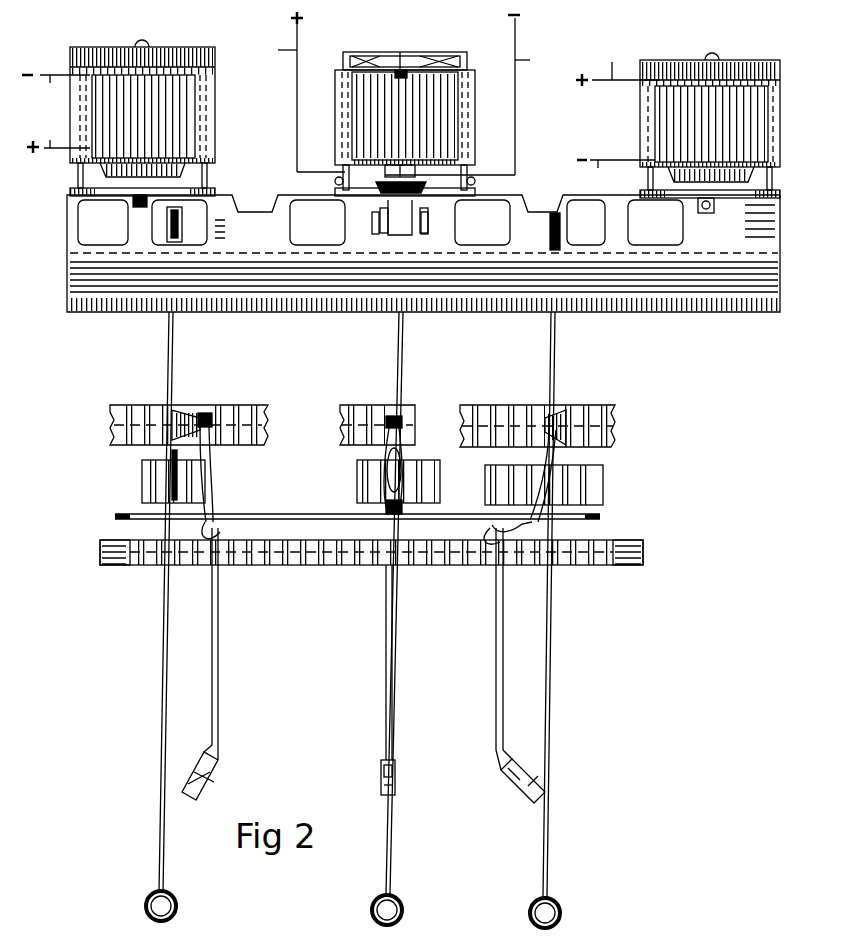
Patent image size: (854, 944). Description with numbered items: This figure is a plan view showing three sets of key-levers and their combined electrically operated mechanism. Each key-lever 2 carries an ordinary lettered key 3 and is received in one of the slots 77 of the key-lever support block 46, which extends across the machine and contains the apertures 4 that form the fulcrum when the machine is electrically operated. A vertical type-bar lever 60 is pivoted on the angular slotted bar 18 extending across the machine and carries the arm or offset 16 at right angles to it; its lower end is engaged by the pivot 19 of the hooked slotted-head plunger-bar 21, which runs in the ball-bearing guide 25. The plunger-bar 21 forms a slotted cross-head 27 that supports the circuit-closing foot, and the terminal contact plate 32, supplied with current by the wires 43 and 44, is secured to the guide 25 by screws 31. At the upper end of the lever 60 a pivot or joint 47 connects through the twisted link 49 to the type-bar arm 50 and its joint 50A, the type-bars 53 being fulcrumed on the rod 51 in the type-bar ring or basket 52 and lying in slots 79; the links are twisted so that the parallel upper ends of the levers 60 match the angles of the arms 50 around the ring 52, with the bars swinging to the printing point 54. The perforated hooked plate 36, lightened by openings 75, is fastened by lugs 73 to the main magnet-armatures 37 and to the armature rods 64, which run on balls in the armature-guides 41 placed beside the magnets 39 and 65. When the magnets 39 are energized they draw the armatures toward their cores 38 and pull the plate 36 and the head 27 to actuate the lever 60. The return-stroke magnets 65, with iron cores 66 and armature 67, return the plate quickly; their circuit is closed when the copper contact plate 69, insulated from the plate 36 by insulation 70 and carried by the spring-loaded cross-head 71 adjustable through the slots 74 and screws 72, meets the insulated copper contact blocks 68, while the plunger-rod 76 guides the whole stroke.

The key-lever 2 is at (166, 612).
The key 3 is at (178, 900).
The aperture 4 is at (115, 515).
The arm or offset 16 is at (170, 453).
The angular slotted bar 18 is at (388, 408).
The pivot 19 is at (205, 412).
The hooked slotted-head plunger-bar 21 is at (169, 355).
The ball-bearing guide 25 is at (650, 300).
The slotted cross-head 27 is at (182, 218).
The screws 31 is at (762, 302).
The terminal contact plate 32 is at (668, 192).
The hooked plate 36 is at (138, 240).
The main magnet-armatures 37 is at (180, 186).
The magnet cores 38 is at (190, 160).
The magnets 39 is at (145, 100).
The armature-guides 41 is at (80, 80).
The wire 43 is at (338, 99).
The wire 44 is at (343, 92).
The key-lever support block 46 is at (150, 490).
The pivot or joint 47 is at (210, 420).
The twisted link 49 is at (214, 462).
The type-bar arm 50 is at (500, 528).
The hook 50A is at (214, 526).
The rod 51 is at (100, 562).
The type-bar supporting ring or basket 52 is at (104, 548).
The type-bars 53 is at (220, 607).
The weight 54 is at (216, 772).
The vertical type-bar lever 60 is at (196, 420).
The armatures 64 is at (80, 178).
The return-stroke magnets 65 is at (376, 90).
The iron cores 66 is at (362, 60).
The armature 67 is at (456, 58).
The copper contact blocks 68 is at (395, 172).
The copper contact circuit-closing plate 69 is at (393, 188).
The insulation 70 is at (410, 190).
The slotted cross-head 71 is at (392, 206).
The screws 72 is at (424, 216).
The lugs 73 is at (130, 203).
The slots 74 is at (375, 216).
The openings 75 is at (497, 225).
The upper rack bar 76 is at (240, 408).
The slots 77 is at (590, 485).
The slots 79 is at (302, 562).